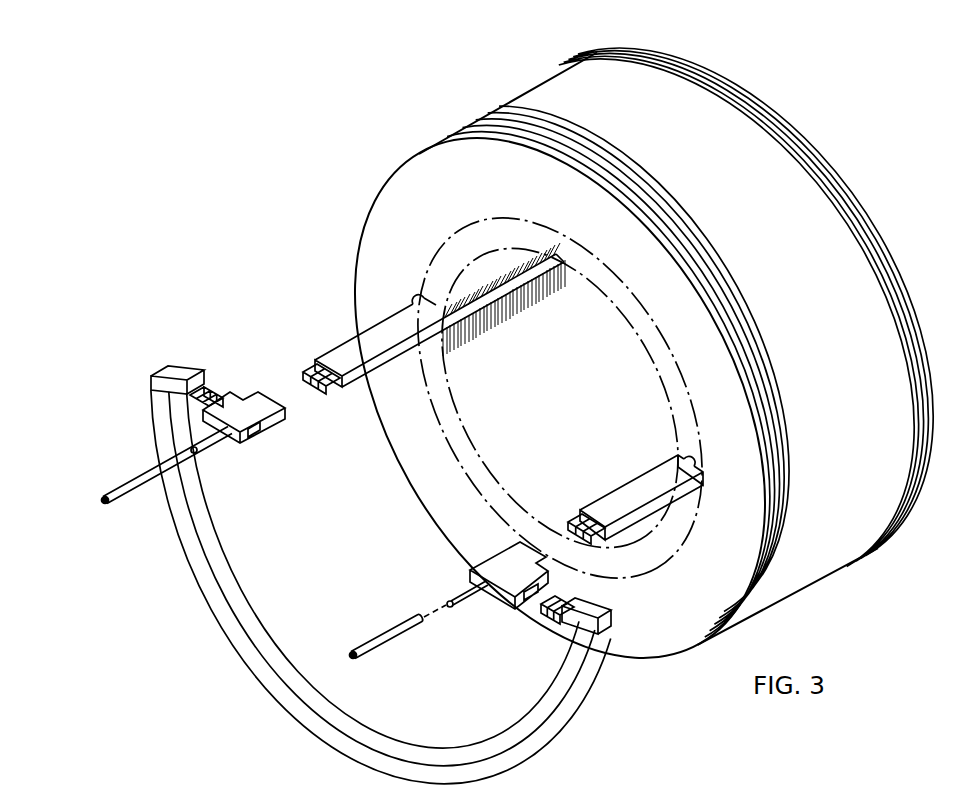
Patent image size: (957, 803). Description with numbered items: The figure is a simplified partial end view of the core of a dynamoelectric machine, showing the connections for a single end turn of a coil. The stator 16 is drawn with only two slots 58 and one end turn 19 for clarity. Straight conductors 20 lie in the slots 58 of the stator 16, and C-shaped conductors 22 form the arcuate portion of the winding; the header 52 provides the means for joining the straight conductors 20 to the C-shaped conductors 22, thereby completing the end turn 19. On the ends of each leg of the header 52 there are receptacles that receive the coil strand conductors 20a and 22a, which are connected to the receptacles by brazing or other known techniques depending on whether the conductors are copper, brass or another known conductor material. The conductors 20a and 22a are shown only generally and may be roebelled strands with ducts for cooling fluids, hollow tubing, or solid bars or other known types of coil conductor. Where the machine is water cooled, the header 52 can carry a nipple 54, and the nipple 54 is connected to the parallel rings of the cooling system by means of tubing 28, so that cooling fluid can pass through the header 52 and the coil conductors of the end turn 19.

The stator 16 is at (388, 188).
The end turn 19 is at (381, 587).
The straight conductors 20 is at (352, 352).
The coil strand conductors 20a is at (320, 396).
The C-shaped conductors 22 is at (257, 604).
The coil strand conductors 22a is at (212, 386).
The tubing 28 is at (123, 487).
The header 52 is at (267, 426).
The nipple 54 is at (453, 609).
The slots 58 is at (418, 305).